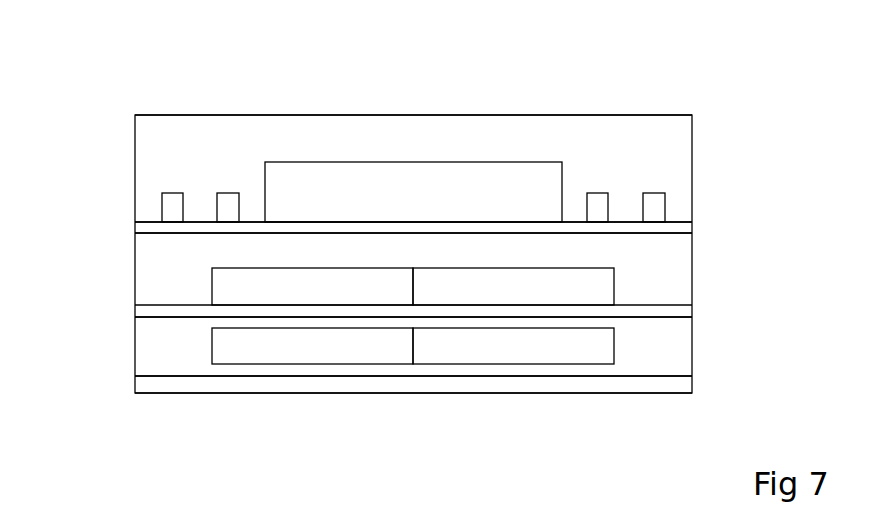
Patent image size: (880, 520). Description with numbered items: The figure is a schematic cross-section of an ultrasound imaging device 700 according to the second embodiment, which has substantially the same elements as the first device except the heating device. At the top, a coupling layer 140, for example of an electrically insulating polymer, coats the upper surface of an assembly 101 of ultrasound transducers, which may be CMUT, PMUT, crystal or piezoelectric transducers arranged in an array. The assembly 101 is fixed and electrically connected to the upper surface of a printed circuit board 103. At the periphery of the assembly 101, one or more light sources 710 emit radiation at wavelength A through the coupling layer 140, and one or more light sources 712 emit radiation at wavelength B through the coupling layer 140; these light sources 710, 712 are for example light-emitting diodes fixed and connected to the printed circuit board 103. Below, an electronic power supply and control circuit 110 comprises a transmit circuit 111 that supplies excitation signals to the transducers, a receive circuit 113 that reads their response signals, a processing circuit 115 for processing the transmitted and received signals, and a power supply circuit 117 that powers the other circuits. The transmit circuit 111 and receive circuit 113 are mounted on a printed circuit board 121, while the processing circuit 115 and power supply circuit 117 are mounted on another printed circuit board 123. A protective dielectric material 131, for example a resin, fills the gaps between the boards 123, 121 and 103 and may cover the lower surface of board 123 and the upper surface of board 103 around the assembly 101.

The ultrasound imaging device 700 is at (125, 22).
The coupling layer 140 is at (652, 138).
The assembly of ultrasound transducers 101 is at (547, 180).
The light sources 710 is at (175, 192).
The light sources 712 is at (232, 192).
The printed circuit board 103 is at (678, 228).
The protective dielectric material 131 is at (152, 257).
The electronic power supply and control circuit 110 is at (92, 318).
The transmit circuit 111 is at (230, 287).
The receive circuit 113 is at (582, 287).
The printed circuit board 121 is at (678, 310).
The processing circuit 115 is at (225, 337).
The power supply circuit 117 is at (593, 353).
The printed circuit board 123 is at (678, 370).